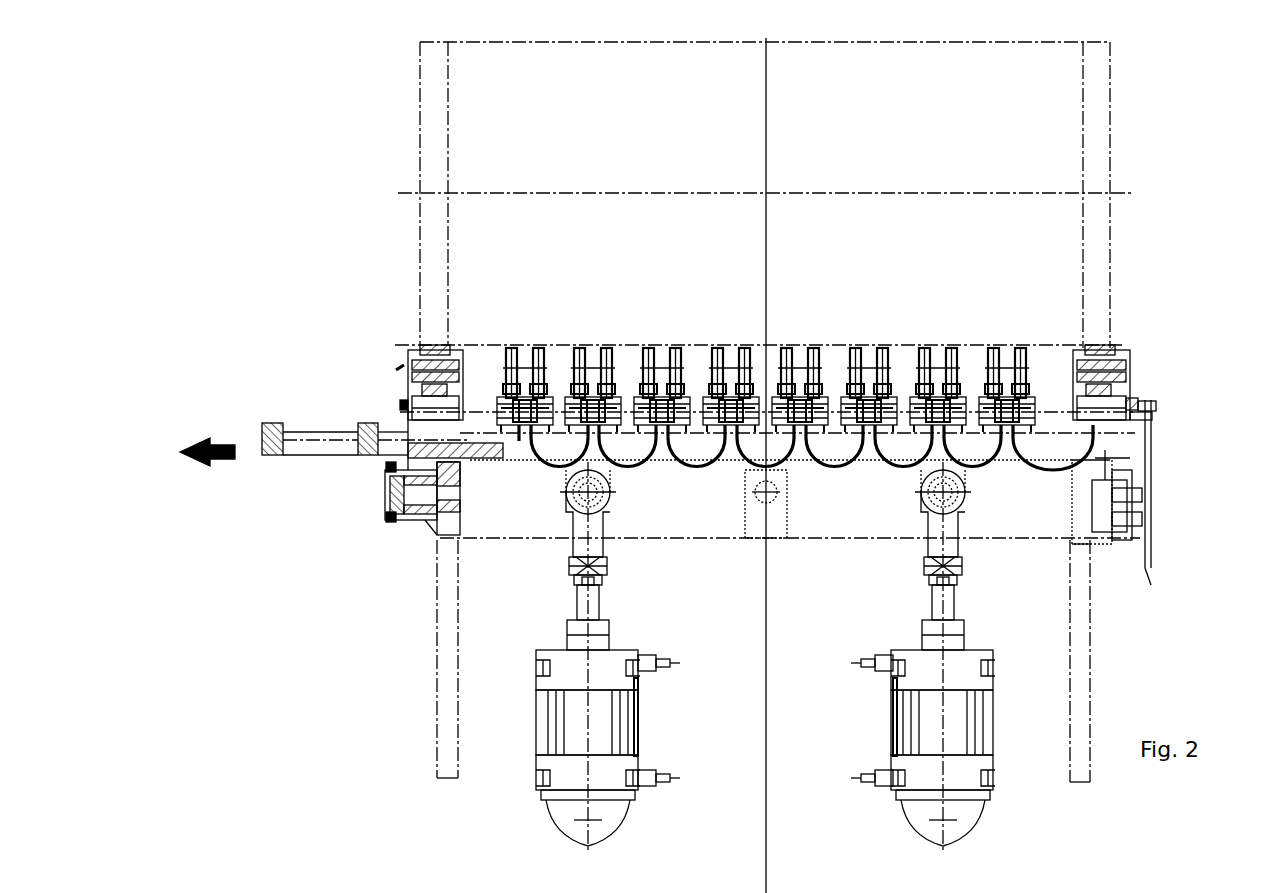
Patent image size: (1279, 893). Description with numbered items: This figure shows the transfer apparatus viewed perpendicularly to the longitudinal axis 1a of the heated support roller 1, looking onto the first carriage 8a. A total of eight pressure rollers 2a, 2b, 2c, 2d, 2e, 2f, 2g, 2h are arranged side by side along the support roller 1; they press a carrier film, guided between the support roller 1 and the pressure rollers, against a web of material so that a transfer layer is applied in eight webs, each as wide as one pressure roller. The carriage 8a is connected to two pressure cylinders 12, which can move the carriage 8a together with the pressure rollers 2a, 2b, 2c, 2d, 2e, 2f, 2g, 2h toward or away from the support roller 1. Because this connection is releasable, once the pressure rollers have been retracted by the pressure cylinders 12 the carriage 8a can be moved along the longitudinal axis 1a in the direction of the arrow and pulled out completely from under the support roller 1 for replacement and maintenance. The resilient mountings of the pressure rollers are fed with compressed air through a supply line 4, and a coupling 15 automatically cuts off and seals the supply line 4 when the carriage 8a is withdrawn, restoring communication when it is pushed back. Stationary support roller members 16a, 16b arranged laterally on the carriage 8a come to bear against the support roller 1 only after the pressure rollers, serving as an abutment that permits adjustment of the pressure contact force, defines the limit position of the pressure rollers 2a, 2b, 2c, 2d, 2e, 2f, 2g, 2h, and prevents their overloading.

The support roller 1 is at (763, 465).
The longitudinal axis 1a is at (1133, 194).
The pressure roller 2a is at (522, 360).
The pressure roller 2b is at (588, 360).
The pressure roller 2c is at (655, 360).
The pressure roller 2d is at (725, 360).
The pressure roller 2e is at (806, 360).
The pressure roller 2f is at (876, 360).
The pressure roller 2g is at (946, 360).
The pressure roller 2h is at (1013, 360).
The supply line 4 is at (990, 452).
The first carriage 8a is at (370, 425).
The pressure cylinder 12 is at (935, 602).
The coupling 15 is at (1158, 366).
The support roller member 16a is at (416, 346).
The support roller member 16b is at (1110, 348).